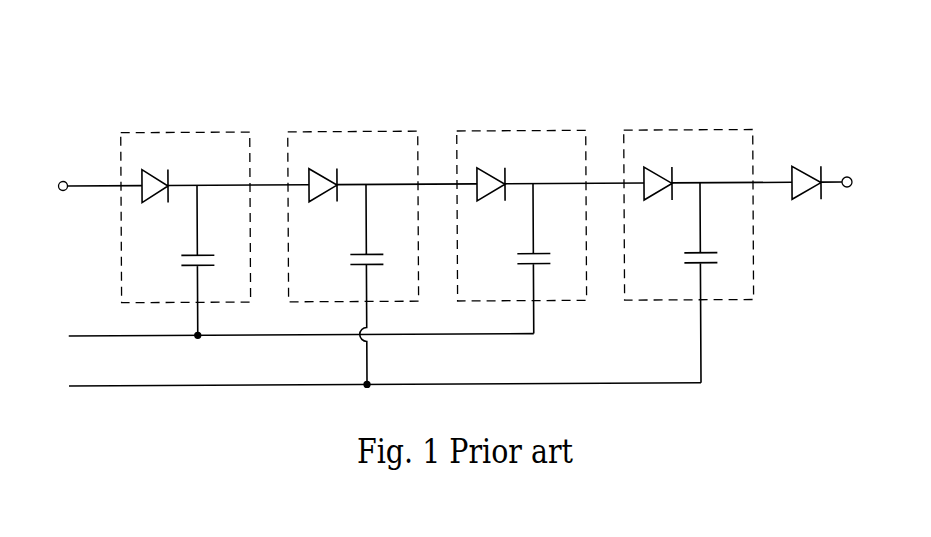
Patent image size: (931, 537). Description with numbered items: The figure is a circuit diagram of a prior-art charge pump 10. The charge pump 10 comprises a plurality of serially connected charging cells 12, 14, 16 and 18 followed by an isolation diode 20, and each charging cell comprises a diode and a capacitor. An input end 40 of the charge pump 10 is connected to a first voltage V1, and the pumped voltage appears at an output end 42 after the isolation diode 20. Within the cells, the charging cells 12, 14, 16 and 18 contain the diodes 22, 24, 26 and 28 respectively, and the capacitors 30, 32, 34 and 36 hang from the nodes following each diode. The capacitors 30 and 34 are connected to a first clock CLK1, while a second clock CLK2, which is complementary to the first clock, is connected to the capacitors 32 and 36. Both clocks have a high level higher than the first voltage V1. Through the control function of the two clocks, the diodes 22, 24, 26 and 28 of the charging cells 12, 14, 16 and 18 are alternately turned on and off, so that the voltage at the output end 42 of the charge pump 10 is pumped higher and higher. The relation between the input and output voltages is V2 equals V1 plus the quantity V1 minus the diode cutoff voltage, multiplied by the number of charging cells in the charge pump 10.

The charge pump 10 is at (187, 63).
The charging cell 12 is at (236, 134).
The charging cell 14 is at (404, 134).
The charging cell 16 is at (572, 134).
The charging cell 18 is at (740, 134).
The isolation diode 20 is at (807, 170).
The diode 22 is at (163, 171).
The diode 24 is at (332, 172).
The diode 26 is at (500, 172).
The diode 28 is at (668, 172).
The capacitor 30 is at (203, 252).
The capacitor 32 is at (372, 254).
The capacitor 34 is at (539, 255).
The capacitor 36 is at (706, 254).
The input end 40 is at (63, 192).
The output end 42 is at (845, 192).